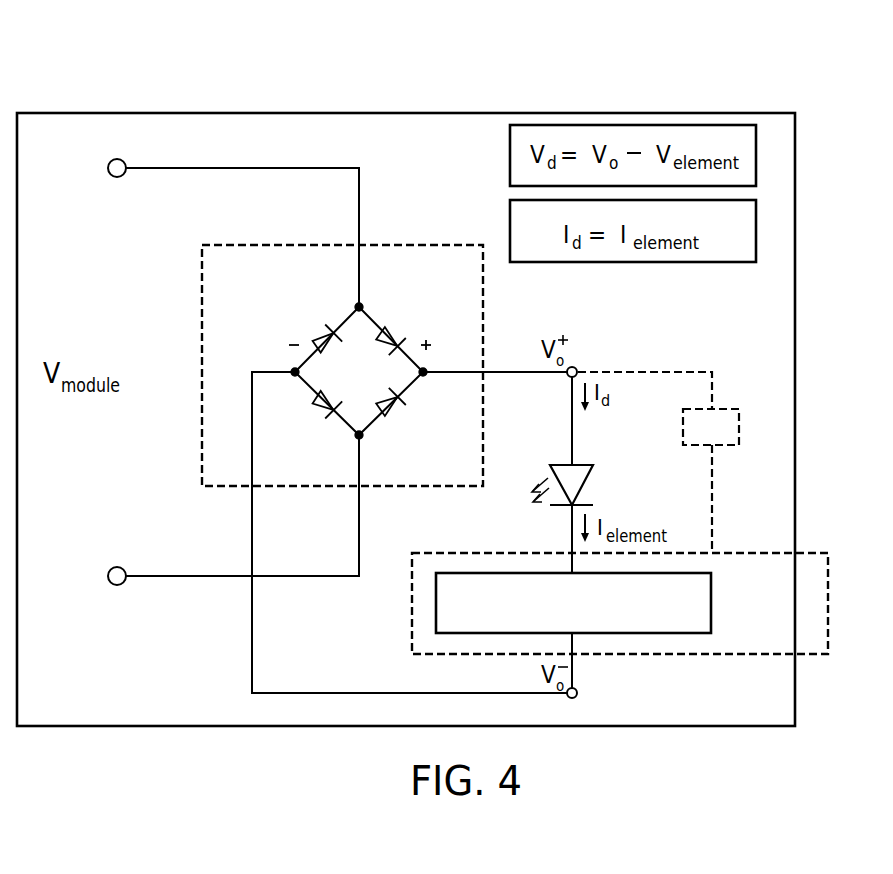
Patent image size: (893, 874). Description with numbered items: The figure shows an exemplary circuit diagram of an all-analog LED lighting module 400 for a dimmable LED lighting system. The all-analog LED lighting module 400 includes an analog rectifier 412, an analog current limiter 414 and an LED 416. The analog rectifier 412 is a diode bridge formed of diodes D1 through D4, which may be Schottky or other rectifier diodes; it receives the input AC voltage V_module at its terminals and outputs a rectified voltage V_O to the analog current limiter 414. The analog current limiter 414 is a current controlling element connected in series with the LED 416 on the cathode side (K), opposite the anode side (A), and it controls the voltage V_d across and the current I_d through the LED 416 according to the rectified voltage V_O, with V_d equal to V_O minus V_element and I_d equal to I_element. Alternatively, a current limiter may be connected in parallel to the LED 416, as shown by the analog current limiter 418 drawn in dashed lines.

The all-analog LED lighting module 400 is at (97, 36).
The analog rectifier 412 is at (409, 245).
The analog current limiter 414 is at (742, 553).
The LED 416 is at (580, 464).
The analog current limiter 418 is at (724, 409).